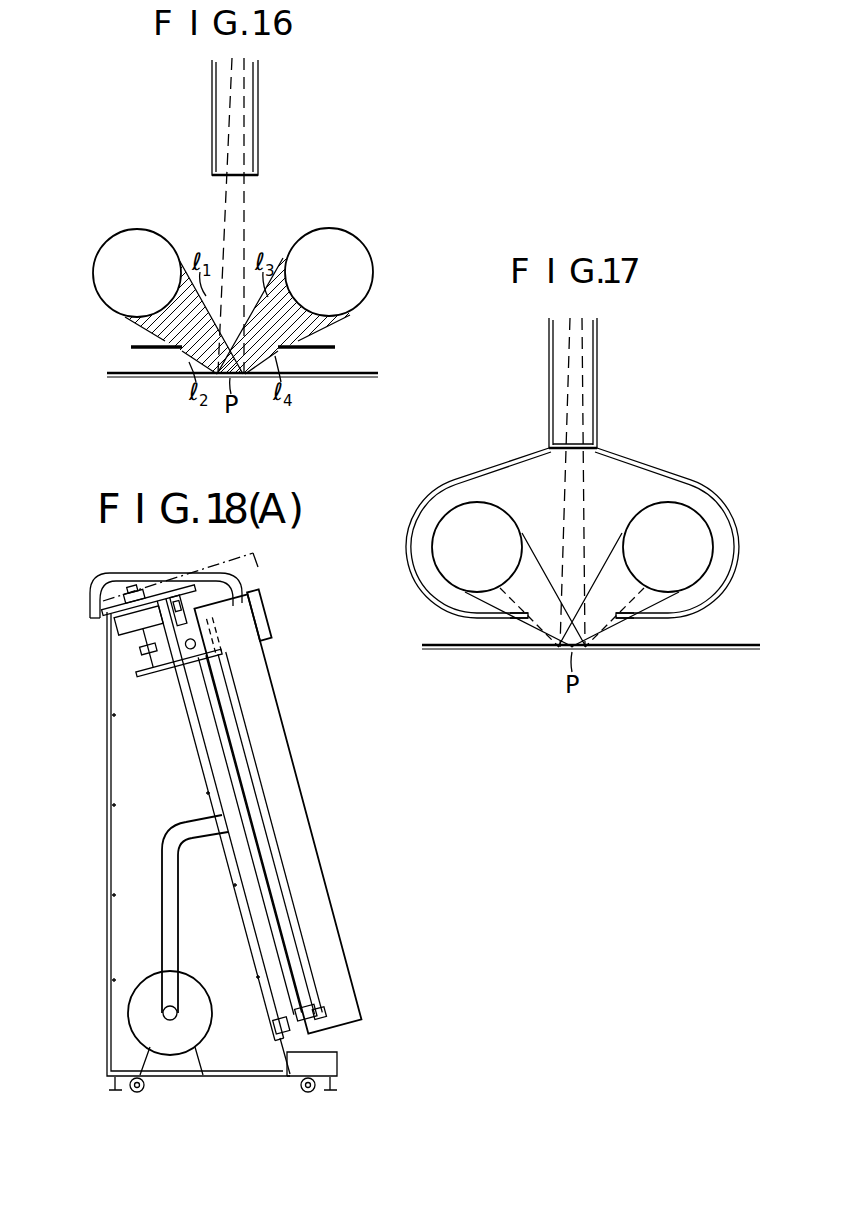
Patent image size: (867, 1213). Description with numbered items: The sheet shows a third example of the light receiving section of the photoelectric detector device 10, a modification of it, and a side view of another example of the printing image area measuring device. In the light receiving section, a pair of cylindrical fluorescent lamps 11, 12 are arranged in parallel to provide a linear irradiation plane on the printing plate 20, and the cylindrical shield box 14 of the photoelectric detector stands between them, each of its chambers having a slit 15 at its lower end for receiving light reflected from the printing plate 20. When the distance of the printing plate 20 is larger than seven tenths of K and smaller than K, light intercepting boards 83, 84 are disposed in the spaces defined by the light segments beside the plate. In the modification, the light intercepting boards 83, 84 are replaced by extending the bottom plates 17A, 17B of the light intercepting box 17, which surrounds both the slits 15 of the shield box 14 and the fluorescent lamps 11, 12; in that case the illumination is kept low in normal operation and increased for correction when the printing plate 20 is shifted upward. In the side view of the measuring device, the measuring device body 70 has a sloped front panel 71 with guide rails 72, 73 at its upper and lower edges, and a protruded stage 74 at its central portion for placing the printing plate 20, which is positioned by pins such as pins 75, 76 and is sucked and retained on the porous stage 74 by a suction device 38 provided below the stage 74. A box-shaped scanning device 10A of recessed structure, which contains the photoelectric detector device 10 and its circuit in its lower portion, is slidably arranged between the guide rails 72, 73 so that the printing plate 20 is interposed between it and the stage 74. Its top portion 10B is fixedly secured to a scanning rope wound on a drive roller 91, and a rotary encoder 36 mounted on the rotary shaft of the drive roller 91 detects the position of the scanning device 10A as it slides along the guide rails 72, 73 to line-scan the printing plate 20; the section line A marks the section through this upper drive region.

In FIG. 16, the photoelectric detector device 10 is at (189, 108).
In FIG. 17, the photoelectric detector device 10 is at (521, 390).
In FIG. 16, the cylindrical shield box 14 is at (258, 110).
In FIG. 17, the cylindrical shield box 14 is at (597, 381).
In FIG. 18A, the cylindrical shield box 14 is at (237, 740).
In FIG. 16, the cylindrical fluorescent lamp 11 is at (100, 246).
In FIG. 17, the cylindrical fluorescent lamp 11 is at (437, 529).
In FIG. 18A, the cylindrical fluorescent lamp 11 is at (255, 796).
In FIG. 16, the cylindrical fluorescent lamp 12 is at (358, 243).
In FIG. 17, the cylindrical fluorescent lamp 12 is at (715, 522).
In FIG. 16, the light intercepting board 83 is at (131, 346).
In FIG. 16, the light intercepting board 84 is at (333, 345).
In FIG. 16, the printing plate 20 is at (327, 378).
In FIG. 17, the printing plate 20 is at (710, 650).
In FIG. 18A, the printing plate 20 is at (293, 890).
In FIG. 17, the slit 15 is at (565, 446).
In FIG. 17, the light intercepting box 17 is at (742, 565).
In FIG. 17, the bottom plate 17A is at (518, 624).
In FIG. 17, the bottom plate 17B is at (628, 624).
In FIG. 18A, the rotary encoder 36 is at (135, 598).
In FIG. 18A, the scanning device 10A is at (295, 786).
In FIG. 18A, the top portion 10B is at (268, 611).
In FIG. 18A, the drive roller 91 is at (118, 626).
In FIG. 18A, the guide rail 72 is at (188, 648).
In FIG. 18A, the sloped front panel 71 is at (195, 728).
In FIG. 18A, the pin 75 is at (223, 724).
In FIG. 18A, the stage 74 is at (220, 754).
In FIG. 18A, the pin 76 is at (268, 890).
In FIG. 18A, the measuring device body 70 is at (107, 846).
In FIG. 18A, the suction device 38 is at (150, 974).
In FIG. 18A, the guide rail 73 is at (283, 1026).
In FIG. 18A, the section line A- A is at (173, 587).